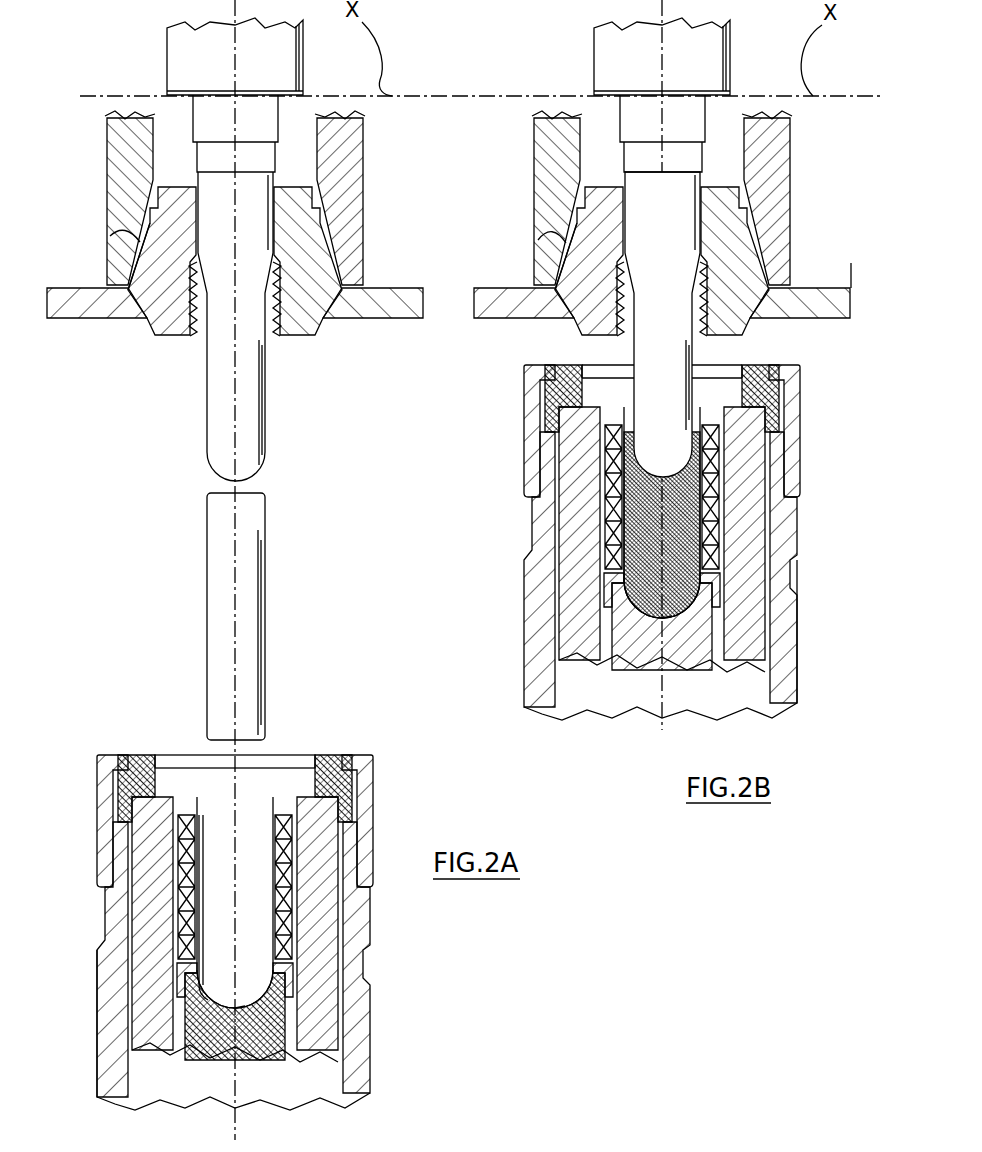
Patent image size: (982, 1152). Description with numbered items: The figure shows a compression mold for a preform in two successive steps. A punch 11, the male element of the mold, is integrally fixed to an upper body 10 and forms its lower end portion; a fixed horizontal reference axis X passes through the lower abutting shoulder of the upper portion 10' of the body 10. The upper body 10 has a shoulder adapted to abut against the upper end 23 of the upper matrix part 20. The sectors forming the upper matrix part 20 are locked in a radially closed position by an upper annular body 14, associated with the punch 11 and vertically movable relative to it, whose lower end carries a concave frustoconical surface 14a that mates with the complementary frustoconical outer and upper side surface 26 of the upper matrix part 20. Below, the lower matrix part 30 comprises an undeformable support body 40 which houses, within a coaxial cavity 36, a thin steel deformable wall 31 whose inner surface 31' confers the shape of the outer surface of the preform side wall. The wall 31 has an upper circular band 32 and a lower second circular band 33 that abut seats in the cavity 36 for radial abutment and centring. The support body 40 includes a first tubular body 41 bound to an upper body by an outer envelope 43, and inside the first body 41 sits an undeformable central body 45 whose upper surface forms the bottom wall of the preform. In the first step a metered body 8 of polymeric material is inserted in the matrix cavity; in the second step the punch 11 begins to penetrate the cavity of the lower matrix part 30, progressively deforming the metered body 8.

In FIG. 2B, the metered body of polymeric material 8 is at (600, 548).
In FIG. 2A, the upper body 10 is at (196, 54).
In FIG. 2B, the upper body 10 is at (691, 47).
In FIG. 2A, the upper portion of the body 10' is at (317, 57).
In FIG. 2B, the upper portion of the body 10' is at (605, 57).
In FIG. 2A, the punch 11 is at (264, 393).
In FIG. 2B, the punch 11 is at (630, 356).
In FIG. 2A, the upper annular body 14 is at (107, 193).
In FIG. 2B, the upper annular body 14 is at (535, 210).
In FIG. 2A, the concave frustoconical surface 14a is at (130, 256).
In FIG. 2B, the concave frustoconical surface 14a is at (572, 221).
In FIG. 2A, the upper matrix part 20 is at (146, 335).
In FIG. 2B, the upper matrix part 20 is at (545, 273).
In FIG. 2A, the upper end of the upper matrix part 23 is at (180, 185).
In FIG. 2B, the upper end of the upper matrix part 23 is at (745, 170).
In FIG. 2A, the outer and upper side surface 26 is at (118, 231).
In FIG. 2B, the outer and upper side surface 26 is at (542, 236).
In FIG. 2A, the lower matrix part 30 is at (100, 743).
In FIG. 2B, the lower matrix part 30 is at (520, 673).
In FIG. 2A, the deformable wall 31 is at (309, 887).
In FIG. 2B, the deformable wall 31 is at (597, 497).
In FIG. 2A, the inner surface of the deformable wall 31' is at (188, 825).
In FIG. 2A, the circular band 32 is at (306, 763).
In FIG. 2A, the second circular band 33 is at (297, 983).
In FIG. 2A, the coaxial cavity 36 is at (297, 843).
In FIG. 2B, the coaxial cavity 36 is at (720, 532).
In FIG. 2A, the support body 40 is at (366, 982).
In FIG. 2B, the support body 40 is at (553, 606).
In FIG. 2A, the first tubular body 41 is at (330, 1037).
In FIG. 2A, the outer envelope 43 is at (98, 1023).
In FIG. 2B, the outer envelope 43 is at (790, 680).
In FIG. 2A, the central body 45 is at (260, 1037).
In FIG. 2B, the central body 45 is at (624, 655).